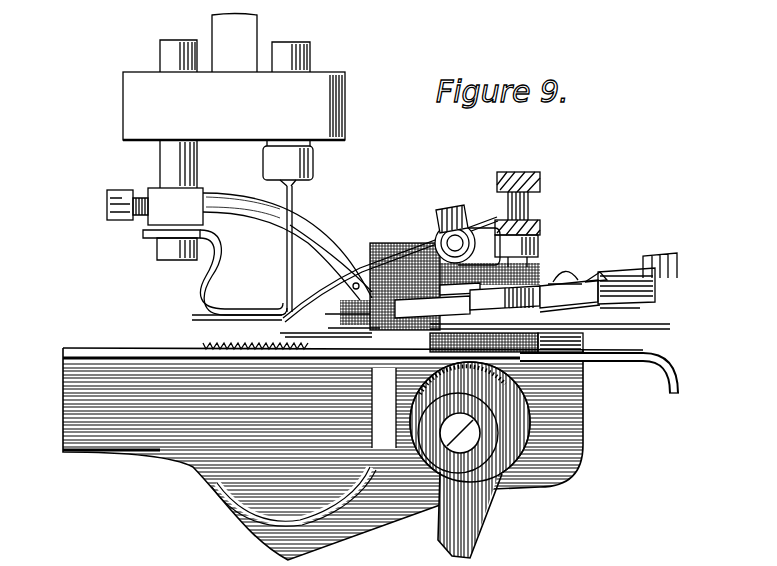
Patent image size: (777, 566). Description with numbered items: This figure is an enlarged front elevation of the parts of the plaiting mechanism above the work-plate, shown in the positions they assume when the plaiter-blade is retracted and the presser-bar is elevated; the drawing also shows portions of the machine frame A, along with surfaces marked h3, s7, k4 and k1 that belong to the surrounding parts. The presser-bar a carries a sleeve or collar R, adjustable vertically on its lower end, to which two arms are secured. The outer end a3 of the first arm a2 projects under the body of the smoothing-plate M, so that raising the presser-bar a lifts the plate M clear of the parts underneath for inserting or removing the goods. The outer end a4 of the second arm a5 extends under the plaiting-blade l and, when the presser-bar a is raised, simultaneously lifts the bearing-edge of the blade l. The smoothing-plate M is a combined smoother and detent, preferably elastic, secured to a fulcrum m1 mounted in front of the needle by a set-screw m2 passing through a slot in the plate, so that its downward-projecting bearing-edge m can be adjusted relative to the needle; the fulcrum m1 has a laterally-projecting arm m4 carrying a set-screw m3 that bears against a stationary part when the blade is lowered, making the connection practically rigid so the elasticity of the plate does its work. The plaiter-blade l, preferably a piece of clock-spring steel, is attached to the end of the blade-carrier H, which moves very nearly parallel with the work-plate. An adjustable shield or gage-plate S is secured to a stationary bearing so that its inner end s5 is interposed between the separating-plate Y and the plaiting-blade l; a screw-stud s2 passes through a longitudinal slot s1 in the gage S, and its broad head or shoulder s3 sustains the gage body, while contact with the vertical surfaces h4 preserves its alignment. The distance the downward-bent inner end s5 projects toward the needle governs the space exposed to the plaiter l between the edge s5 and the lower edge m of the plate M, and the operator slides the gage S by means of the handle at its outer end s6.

The frame A is at (371, 287).
The presser-bar a is at (174, 200).
The presser-arm a2 is at (282, 230).
The outer end of arm a2 a3 is at (390, 269).
The outer end of arm a5 a4 is at (334, 300).
The presser-arm a5 is at (331, 258).
The sleeve or collar R is at (155, 213).
The smoothing-plate M is at (461, 284).
The bearing-edge m is at (283, 319).
The fulcrum m1 is at (467, 244).
The set-screw m2 is at (452, 212).
The set-screw m3 is at (522, 188).
The laterally-projecting arm m4 is at (540, 238).
The plaiter-blade l is at (343, 308).
The inner end of gage-plate s5 is at (354, 325).
The longitudinal slot s1 is at (361, 325).
The separating-plate Y is at (346, 350).
The vertical surfaces h4 is at (432, 310).
The slide h3 is at (450, 286).
The blade-carrier H is at (505, 298).
The gage-plate S is at (597, 288).
The screw-stud s2 is at (565, 269).
The spring tip s7 is at (596, 272).
The outer end of gage-plate s6 is at (660, 261).
The head or supporting-shoulder s3 is at (603, 313).
The lever k4 is at (570, 316).
The lever pin k1 is at (488, 268).